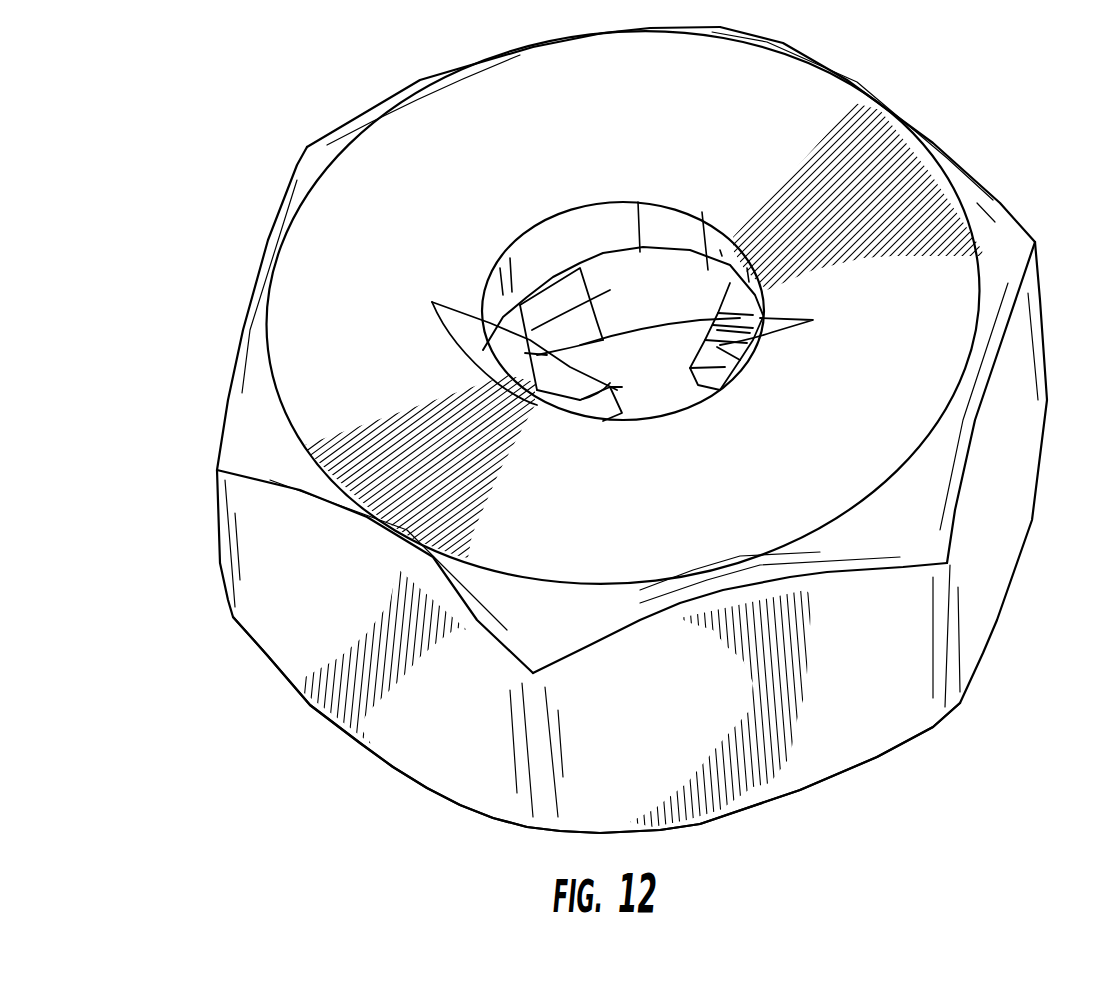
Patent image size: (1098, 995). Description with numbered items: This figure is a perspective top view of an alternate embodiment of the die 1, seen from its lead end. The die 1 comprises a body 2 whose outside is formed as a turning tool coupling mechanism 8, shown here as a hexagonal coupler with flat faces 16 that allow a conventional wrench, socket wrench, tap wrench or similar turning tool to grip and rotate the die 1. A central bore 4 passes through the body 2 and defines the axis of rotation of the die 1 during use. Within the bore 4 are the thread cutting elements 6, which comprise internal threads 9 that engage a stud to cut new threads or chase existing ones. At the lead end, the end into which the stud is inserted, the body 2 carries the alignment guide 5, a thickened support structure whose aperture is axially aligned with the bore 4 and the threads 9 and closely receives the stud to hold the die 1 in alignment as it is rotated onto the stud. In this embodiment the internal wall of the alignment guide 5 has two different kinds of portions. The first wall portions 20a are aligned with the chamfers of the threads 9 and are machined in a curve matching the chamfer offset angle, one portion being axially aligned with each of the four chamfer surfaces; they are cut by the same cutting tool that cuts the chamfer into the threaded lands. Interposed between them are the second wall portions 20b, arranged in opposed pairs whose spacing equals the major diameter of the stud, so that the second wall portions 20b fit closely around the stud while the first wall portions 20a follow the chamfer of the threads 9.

The die 1 is at (961, 102).
The body 2 is at (1001, 206).
The bore 4 is at (648, 373).
The alignment guide 5 is at (667, 442).
The thread cutting elements 6 is at (603, 293).
The turning tool coupling mechanism 8 is at (927, 724).
The internal threads 9 is at (432, 302).
The flat faces 16 is at (430, 74).
The first wall portions 20a is at (565, 234).
The second wall portions 20b is at (661, 200).